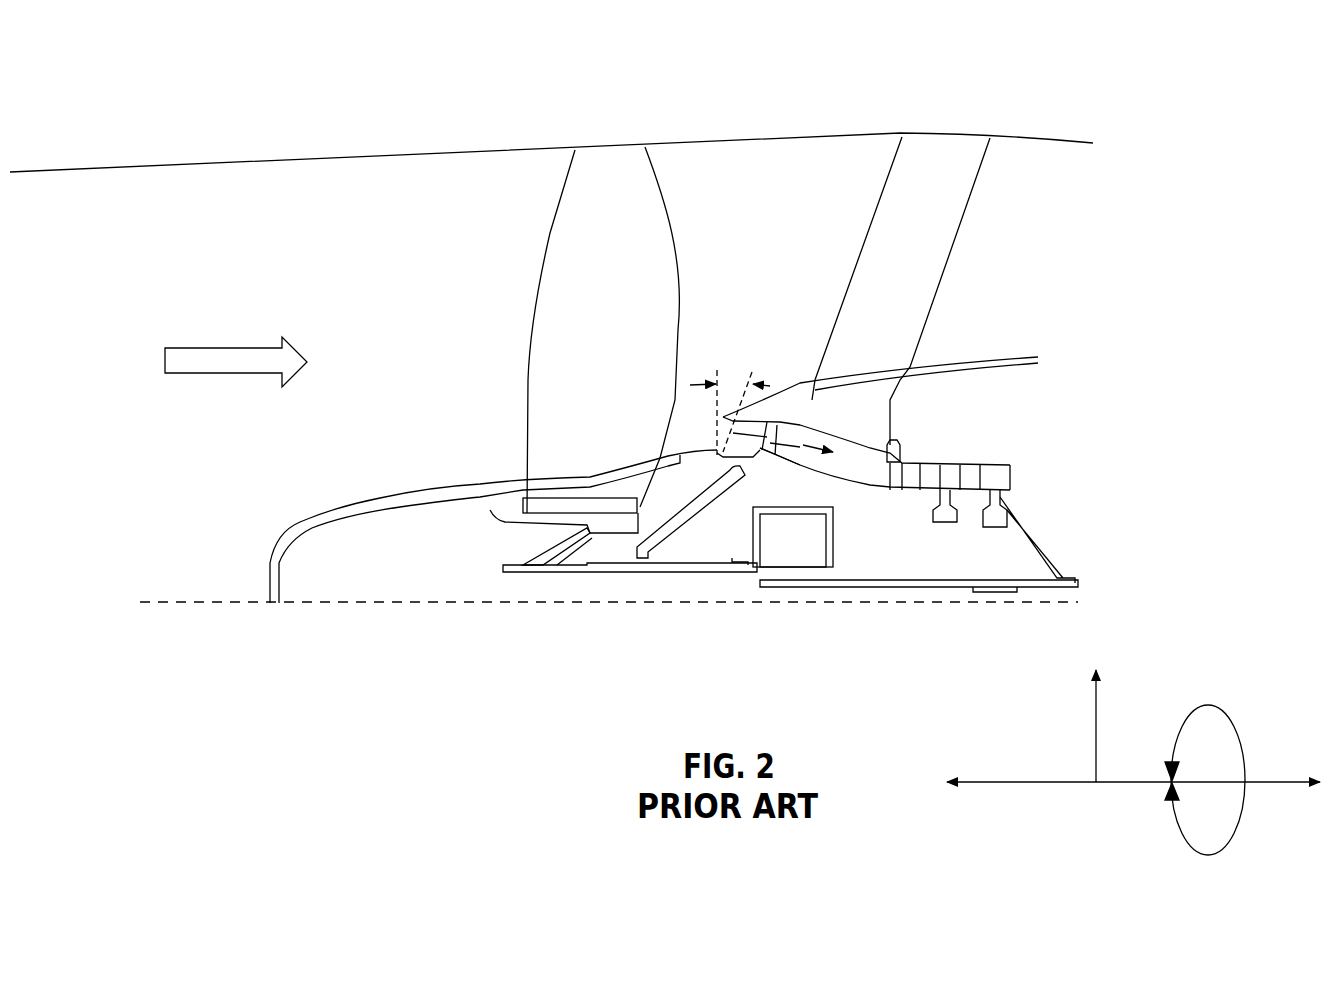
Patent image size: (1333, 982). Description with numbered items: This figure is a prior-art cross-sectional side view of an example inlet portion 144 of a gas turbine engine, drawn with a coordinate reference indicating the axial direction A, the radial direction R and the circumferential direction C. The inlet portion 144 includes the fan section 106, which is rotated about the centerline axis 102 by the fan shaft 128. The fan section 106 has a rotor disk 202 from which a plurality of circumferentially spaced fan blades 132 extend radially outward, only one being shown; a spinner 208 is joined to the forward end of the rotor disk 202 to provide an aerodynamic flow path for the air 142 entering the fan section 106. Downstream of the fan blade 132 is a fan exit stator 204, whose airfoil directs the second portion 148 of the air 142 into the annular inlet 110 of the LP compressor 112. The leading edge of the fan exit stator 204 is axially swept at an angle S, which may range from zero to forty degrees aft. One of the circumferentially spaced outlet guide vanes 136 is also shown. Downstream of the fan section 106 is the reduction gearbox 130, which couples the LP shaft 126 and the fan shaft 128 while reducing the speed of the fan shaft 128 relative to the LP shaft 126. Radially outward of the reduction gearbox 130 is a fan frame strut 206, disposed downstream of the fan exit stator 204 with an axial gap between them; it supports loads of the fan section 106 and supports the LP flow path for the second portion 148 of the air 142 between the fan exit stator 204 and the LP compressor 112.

The centerline axis 102 is at (437, 602).
The fan section 106 is at (465, 303).
The annular inlet 110 is at (883, 473).
The LP compressor 112 is at (953, 443).
The LP shaft 126 is at (882, 587).
The fan shaft 128 is at (657, 572).
The reduction gearbox 130 is at (835, 548).
The fan blade 132 is at (680, 283).
The outlet guide vane 136 is at (963, 215).
The air 142 is at (223, 373).
The inlet portion 144 is at (112, 108).
The second portion of the air 148 is at (803, 448).
The rotor disk 202 is at (533, 525).
The fan exit stator 204 is at (768, 450).
The fan frame strut 206 is at (857, 441).
The spinner 208 is at (370, 500).
The angle of sweep S is at (756, 384).
The axial direction A is at (1058, 782).
The radial direction R is at (1095, 747).
The circumferential direction C is at (1247, 763).